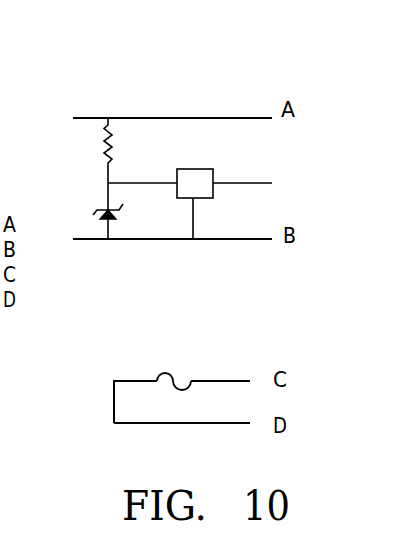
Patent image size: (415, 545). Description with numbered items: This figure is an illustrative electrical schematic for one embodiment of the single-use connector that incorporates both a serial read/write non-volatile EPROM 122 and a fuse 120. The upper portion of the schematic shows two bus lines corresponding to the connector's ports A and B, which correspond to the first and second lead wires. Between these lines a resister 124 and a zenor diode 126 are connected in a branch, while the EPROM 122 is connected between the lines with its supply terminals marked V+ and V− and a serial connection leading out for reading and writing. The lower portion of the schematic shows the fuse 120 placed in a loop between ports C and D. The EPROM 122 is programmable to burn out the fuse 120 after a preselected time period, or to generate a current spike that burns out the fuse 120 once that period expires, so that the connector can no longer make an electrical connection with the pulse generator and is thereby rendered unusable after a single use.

The fuse 120 is at (177, 365).
The EPROM 122 is at (193, 183).
The resister 124 is at (105, 146).
The zenor diode 126 is at (88, 213).